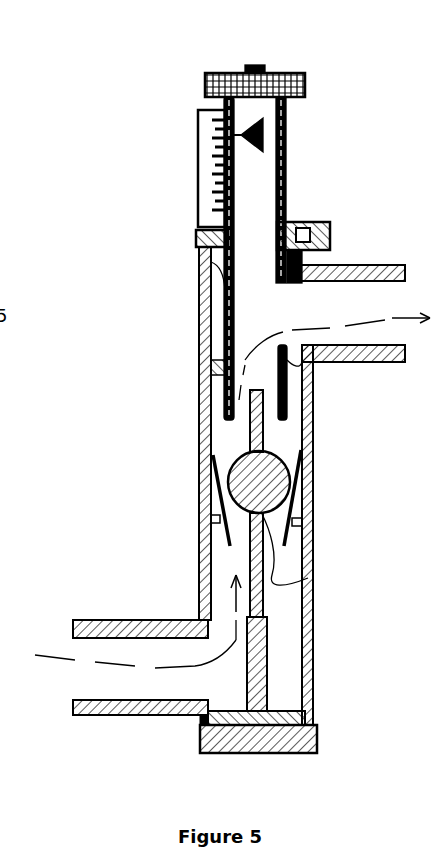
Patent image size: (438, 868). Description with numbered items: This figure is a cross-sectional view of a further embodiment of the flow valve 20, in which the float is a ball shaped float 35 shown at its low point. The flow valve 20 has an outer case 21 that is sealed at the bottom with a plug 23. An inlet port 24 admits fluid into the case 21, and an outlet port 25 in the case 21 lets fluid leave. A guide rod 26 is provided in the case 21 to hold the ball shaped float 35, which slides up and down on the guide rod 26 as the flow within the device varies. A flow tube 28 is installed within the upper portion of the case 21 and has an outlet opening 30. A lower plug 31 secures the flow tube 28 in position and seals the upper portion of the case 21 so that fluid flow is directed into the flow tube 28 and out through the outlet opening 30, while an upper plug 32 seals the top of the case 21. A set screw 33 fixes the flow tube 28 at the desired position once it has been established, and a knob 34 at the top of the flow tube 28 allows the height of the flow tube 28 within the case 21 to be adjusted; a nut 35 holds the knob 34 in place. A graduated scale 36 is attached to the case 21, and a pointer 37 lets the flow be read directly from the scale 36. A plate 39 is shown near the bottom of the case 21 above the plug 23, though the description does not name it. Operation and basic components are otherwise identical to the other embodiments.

The flow valve 20 is at (98, 74).
The outer case 21 is at (178, 400).
The plug 23 is at (200, 742).
The inlet port 24 is at (96, 677).
The outlet port 25 is at (398, 338).
The guide rod 26 is at (265, 592).
The flow tube 28 is at (288, 150).
The outlet opening 30 is at (248, 293).
The lower plug 31 is at (300, 384).
The upper plug 32 is at (197, 297).
The set screw 33 is at (328, 236).
The knob 34 is at (305, 84).
The ball shaped float 35 is at (268, 66).
The graduated scale 36 is at (197, 148).
The pointer 37 is at (250, 150).
The plate 39 is at (293, 708).